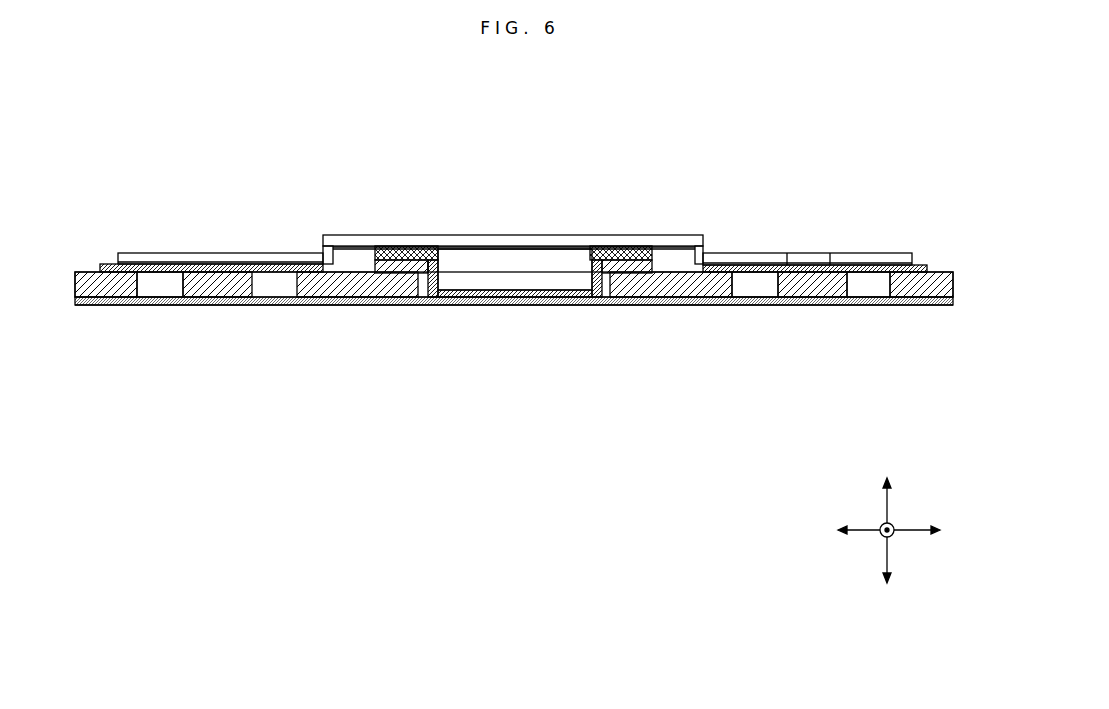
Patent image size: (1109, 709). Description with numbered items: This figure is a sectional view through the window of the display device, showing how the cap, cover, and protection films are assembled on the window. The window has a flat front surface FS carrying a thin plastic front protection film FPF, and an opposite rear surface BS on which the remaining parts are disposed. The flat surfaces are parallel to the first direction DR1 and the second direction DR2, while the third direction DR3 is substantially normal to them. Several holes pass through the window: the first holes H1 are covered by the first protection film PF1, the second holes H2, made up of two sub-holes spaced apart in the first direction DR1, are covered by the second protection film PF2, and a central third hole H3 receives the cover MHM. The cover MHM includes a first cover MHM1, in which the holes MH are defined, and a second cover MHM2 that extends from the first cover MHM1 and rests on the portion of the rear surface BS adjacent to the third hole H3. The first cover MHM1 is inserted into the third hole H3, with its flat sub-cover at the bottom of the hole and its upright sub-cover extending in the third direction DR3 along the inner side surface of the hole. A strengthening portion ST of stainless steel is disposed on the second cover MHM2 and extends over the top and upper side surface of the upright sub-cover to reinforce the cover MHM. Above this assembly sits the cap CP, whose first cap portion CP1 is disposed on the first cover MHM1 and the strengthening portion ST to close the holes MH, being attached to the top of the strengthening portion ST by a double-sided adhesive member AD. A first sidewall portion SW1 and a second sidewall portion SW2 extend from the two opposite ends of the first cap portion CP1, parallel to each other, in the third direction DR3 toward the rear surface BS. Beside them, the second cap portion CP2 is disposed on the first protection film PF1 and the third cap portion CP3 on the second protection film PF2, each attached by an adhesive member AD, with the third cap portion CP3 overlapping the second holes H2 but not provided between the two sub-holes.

The rear surface BS is at (78, 268).
The first protection film PF1 is at (138, 264).
The second cap portion CP2 is at (190, 253).
The adhesive member AD is at (244, 262).
The first sidewall portion SW1 is at (321, 235).
The strengthening portion ST is at (398, 258).
The holes MH is at (456, 246).
The first cap portion CP1 is at (507, 245).
The cap CP is at (651, 231).
The second sidewall portion SW2 is at (712, 244).
The third cap portion CP3 is at (757, 253).
The second protection film PF2 is at (892, 253).
The front surface FS is at (91, 306).
The first holes H1 is at (161, 288).
The front protection film FPF is at (215, 299).
The cover MHM is at (491, 353).
The first cover MHM1 is at (513, 337).
The second cover MHM2 is at (388, 296).
The second holes H2 is at (905, 372).
The third hole H3 is at (418, 262).
The first direction DR1 is at (909, 530).
The second direction DR2 is at (893, 540).
The third direction DR3 is at (888, 488).